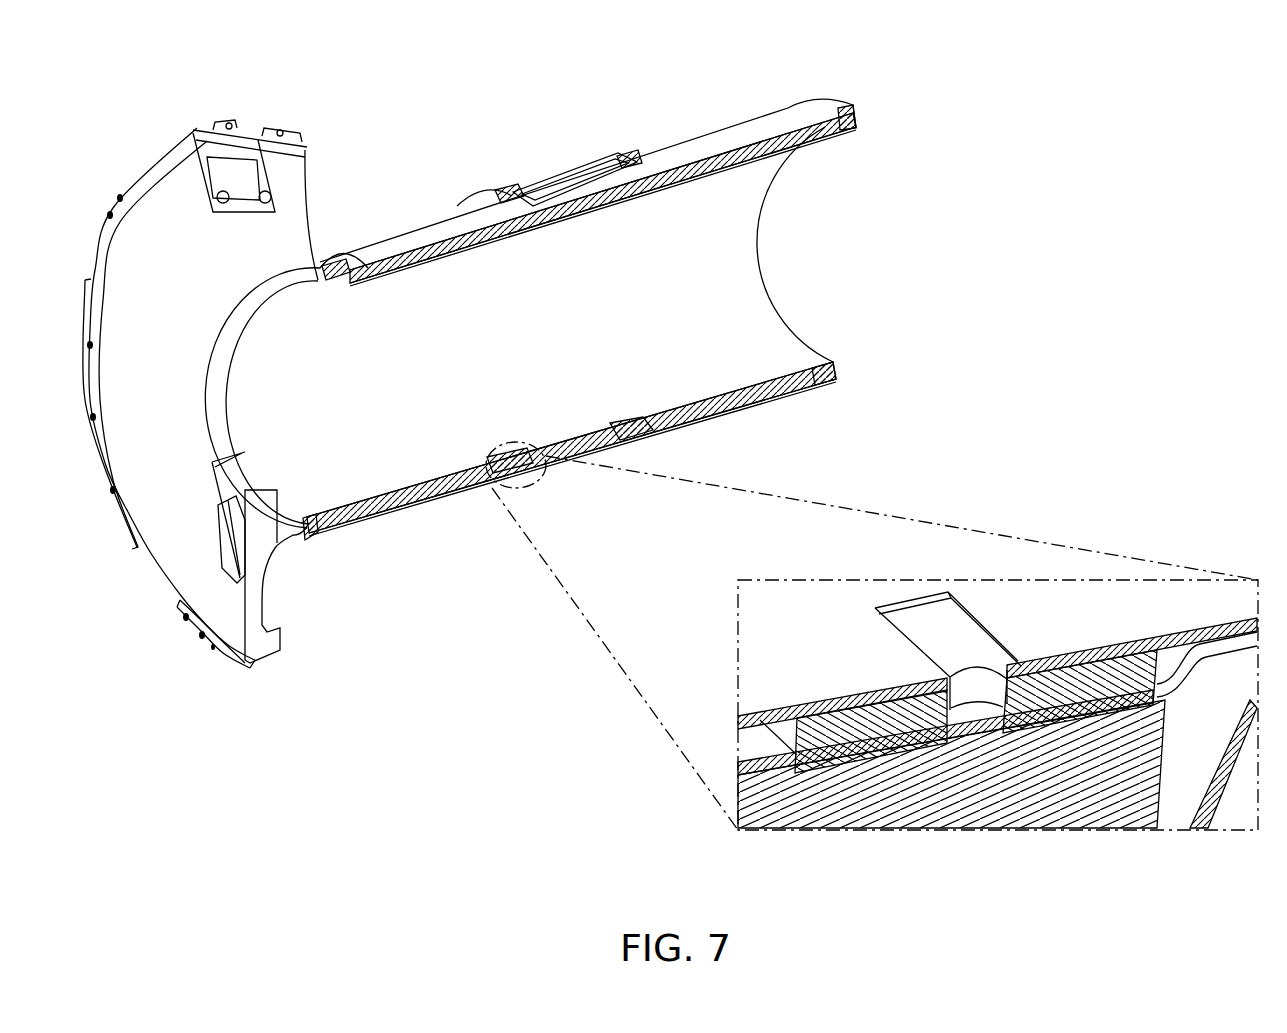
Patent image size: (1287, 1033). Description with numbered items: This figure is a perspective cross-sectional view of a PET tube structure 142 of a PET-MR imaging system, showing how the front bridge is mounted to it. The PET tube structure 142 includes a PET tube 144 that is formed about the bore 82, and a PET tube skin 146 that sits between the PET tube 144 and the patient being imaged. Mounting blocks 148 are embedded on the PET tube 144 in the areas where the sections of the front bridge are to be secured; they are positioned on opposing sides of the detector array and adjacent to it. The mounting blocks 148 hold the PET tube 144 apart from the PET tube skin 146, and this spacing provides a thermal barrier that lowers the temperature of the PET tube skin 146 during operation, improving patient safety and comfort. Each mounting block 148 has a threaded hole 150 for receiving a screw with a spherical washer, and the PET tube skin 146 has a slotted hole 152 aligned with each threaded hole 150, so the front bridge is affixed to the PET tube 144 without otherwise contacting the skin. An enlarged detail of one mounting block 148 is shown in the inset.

The PET tube structure 142 is at (680, 98).
The PET tube 144 is at (433, 243).
The PET tube skin 146 is at (757, 218).
The mounting block 148 is at (354, 268).
The threaded hole 150 is at (976, 706).
The slotted hole 152 is at (942, 634).
The bore 82 is at (821, 264).